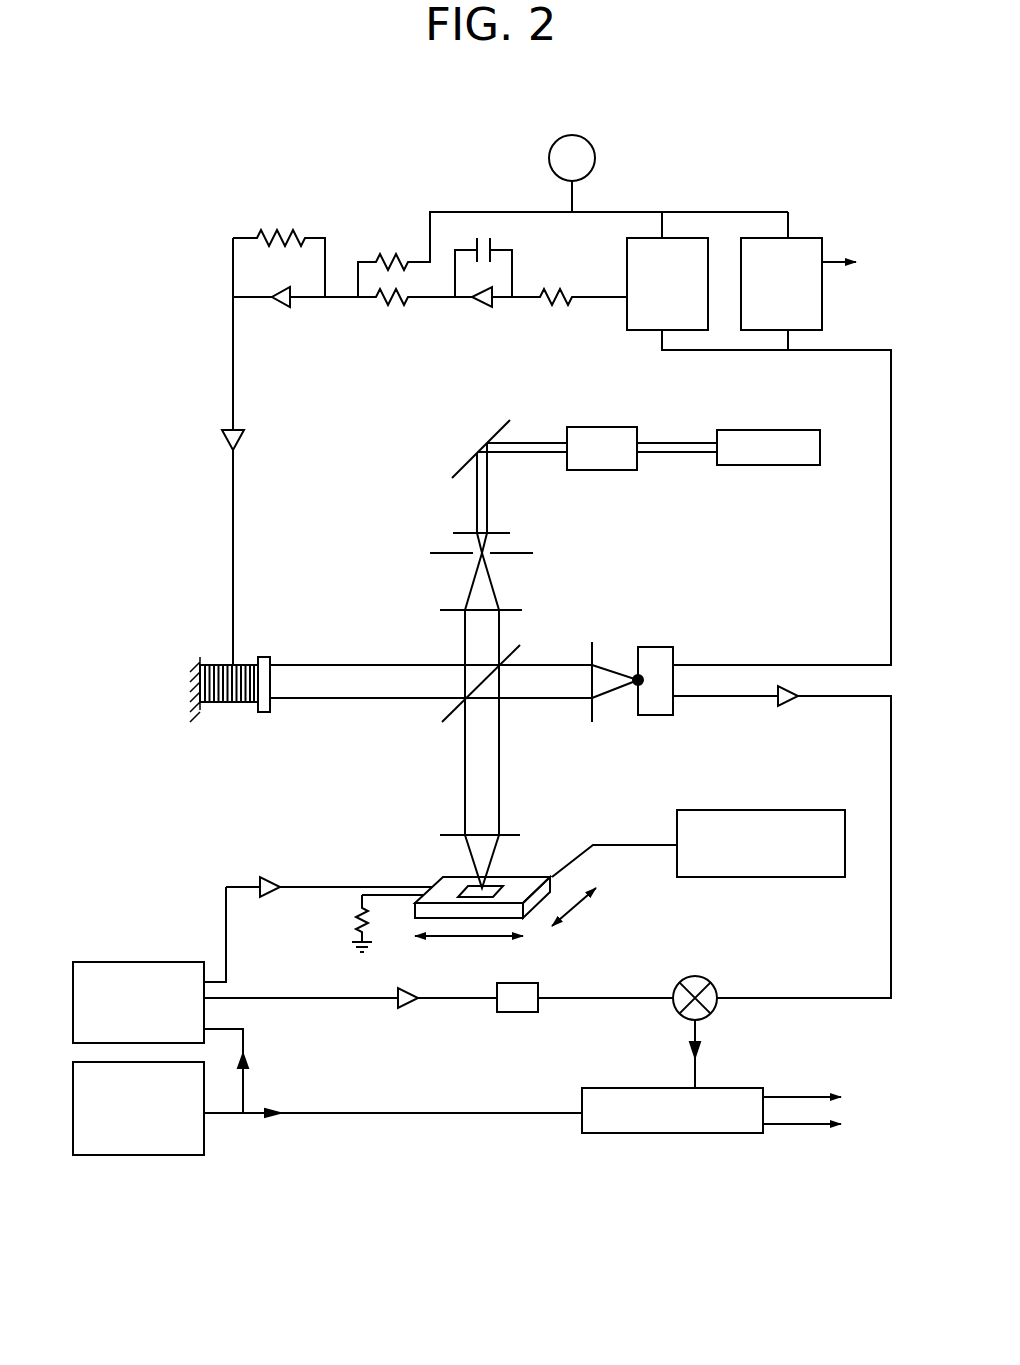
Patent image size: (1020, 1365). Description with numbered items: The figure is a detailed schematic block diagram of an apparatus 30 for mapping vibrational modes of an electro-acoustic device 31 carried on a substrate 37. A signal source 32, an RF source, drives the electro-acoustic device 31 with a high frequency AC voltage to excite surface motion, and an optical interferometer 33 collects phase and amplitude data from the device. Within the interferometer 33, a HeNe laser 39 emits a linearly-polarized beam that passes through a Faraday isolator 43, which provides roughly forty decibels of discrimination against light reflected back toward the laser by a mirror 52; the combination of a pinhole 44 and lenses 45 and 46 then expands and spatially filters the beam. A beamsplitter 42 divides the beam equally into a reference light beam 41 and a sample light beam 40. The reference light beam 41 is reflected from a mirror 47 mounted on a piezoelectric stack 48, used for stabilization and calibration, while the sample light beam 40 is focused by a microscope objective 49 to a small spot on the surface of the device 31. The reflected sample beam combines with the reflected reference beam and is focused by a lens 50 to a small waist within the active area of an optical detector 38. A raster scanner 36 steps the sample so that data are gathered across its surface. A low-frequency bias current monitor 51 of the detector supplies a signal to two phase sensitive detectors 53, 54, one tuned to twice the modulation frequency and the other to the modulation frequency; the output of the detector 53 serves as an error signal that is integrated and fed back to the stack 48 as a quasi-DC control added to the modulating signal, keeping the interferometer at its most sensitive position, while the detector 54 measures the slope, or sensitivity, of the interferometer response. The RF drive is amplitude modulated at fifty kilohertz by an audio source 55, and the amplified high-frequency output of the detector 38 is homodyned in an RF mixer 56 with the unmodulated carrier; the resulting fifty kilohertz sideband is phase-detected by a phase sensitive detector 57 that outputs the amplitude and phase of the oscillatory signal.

The apparatus 30 is at (166, 248).
The electro-acoustic device 31 is at (508, 876).
The signal source 32 is at (87, 962).
The optical interferometer 33 is at (369, 486).
The raster scanner 36 is at (718, 810).
The substrate 37 is at (440, 880).
The optical detector 38 is at (660, 647).
The HeNe laser 39 is at (772, 430).
The sample light beam 40 is at (508, 773).
The reference light beam 41 is at (357, 656).
The beamsplitter 42 is at (445, 712).
The Faraday isolator 43 is at (602, 427).
The pinhole 44 is at (532, 553).
The lens 45 is at (502, 530).
The lens 46 is at (518, 609).
The mirror 47 is at (273, 710).
The piezoelectric stack 48 is at (215, 663).
The microscope objective 49 is at (452, 834).
The lens 50 is at (592, 645).
The bias current monitor 51 is at (827, 193).
The mirror 52 is at (484, 446).
The phase sensitive detector 53 is at (627, 312).
The phase sensitive detector 54 is at (822, 312).
The audio source 55 is at (204, 1150).
The RF mixer 56 is at (717, 1005).
The 50 kHz phase sensitive detector 57 is at (680, 1133).